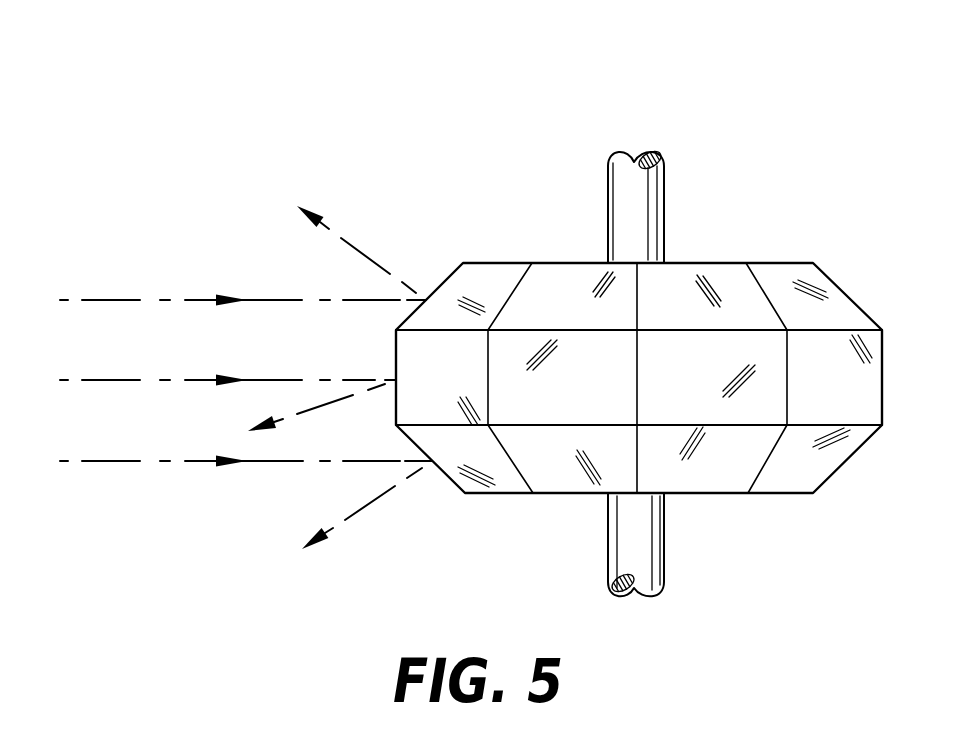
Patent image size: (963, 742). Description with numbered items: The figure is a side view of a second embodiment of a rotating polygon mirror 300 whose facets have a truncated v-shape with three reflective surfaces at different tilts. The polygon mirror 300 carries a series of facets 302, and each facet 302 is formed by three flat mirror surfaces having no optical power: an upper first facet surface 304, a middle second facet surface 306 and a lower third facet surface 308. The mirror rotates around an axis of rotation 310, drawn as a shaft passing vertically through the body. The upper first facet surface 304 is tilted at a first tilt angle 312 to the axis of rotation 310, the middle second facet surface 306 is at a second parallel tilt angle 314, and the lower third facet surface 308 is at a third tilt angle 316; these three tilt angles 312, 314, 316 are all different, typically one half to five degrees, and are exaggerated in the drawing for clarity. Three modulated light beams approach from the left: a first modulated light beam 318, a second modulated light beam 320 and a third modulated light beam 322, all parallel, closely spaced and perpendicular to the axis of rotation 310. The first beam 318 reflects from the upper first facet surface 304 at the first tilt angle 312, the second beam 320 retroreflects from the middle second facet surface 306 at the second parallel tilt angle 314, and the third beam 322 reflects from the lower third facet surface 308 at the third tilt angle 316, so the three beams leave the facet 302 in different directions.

The rotating polygon mirror 300 is at (698, 90).
The facet 302 is at (402, 213).
The upper first facet surface 304 is at (437, 280).
The middle second facet surface 306 is at (396, 408).
The lower third facet surface 308 is at (450, 473).
The axis of rotation 310 is at (643, 224).
The first tilt angle 312 is at (351, 247).
The second parallel tilt angle 314 is at (377, 386).
The third tilt angle 316 is at (356, 512).
The first modulated light beam 318 is at (187, 300).
The second modulated light beam 320 is at (187, 380).
The third modulated light beam 322 is at (187, 462).